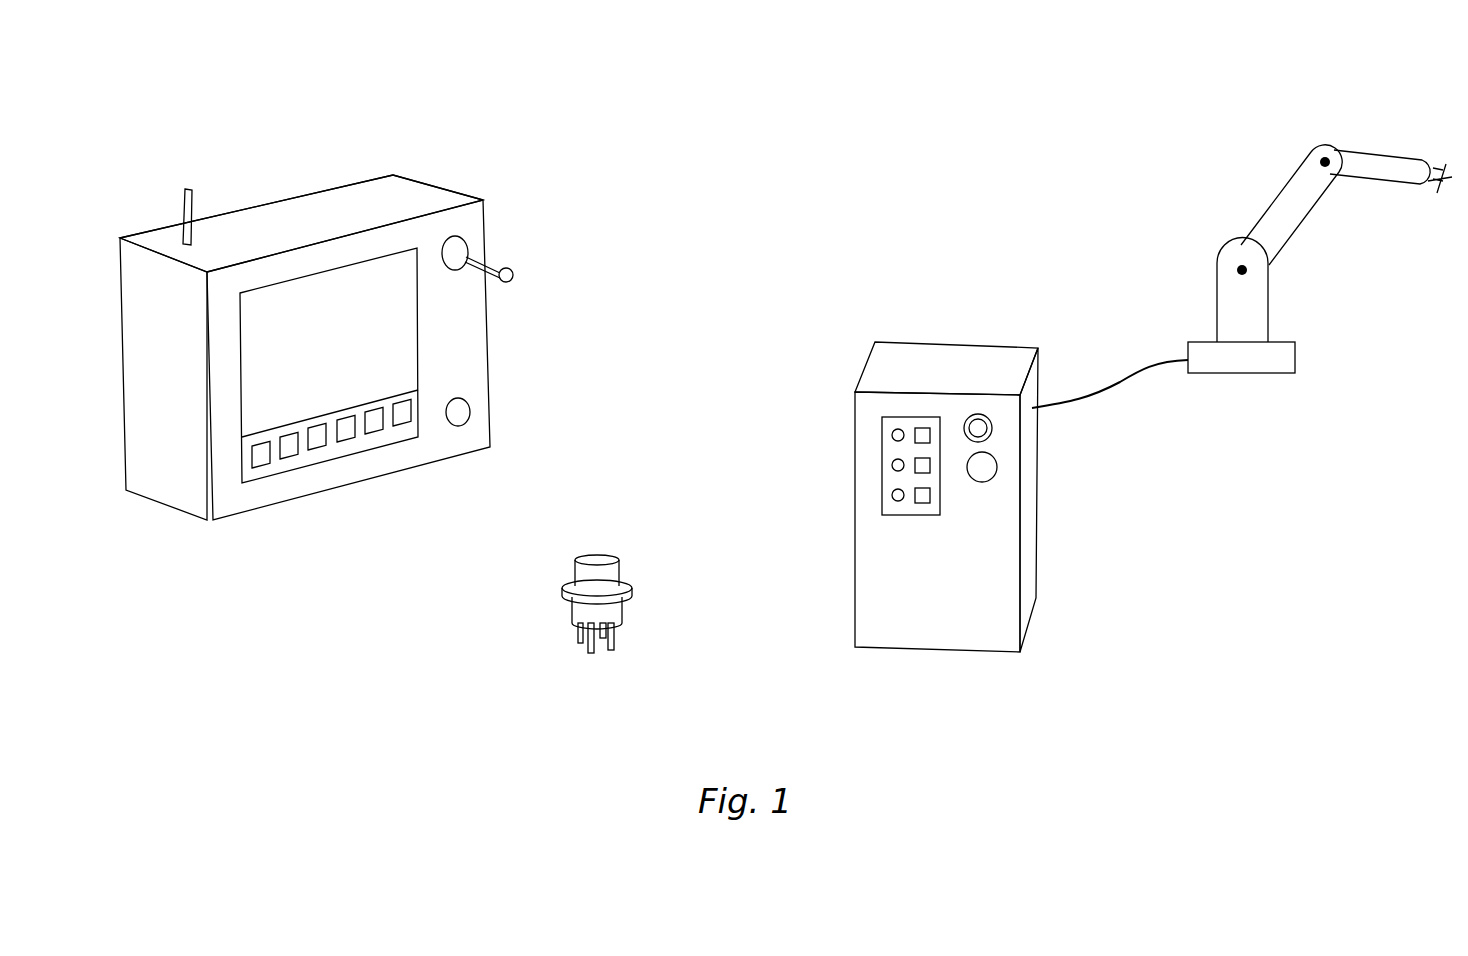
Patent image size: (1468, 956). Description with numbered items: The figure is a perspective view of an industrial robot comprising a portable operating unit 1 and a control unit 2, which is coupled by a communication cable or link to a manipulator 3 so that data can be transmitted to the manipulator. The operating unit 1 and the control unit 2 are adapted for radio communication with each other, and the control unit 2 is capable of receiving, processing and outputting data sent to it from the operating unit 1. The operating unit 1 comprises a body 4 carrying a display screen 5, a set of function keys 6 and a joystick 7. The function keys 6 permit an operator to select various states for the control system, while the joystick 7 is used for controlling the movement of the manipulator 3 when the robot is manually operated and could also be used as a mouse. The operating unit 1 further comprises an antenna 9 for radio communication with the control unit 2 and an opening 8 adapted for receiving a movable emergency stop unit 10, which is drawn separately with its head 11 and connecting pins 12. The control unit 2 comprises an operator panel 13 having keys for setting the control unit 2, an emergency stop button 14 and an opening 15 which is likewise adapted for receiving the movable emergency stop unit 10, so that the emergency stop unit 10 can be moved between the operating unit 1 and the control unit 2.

The portable operating unit 1 is at (296, 188).
The control unit 2 is at (959, 336).
The manipulator 3 is at (1318, 225).
The body 4 is at (418, 193).
The display screen 5 is at (372, 292).
The function keys 6 is at (291, 456).
The joystick 7 is at (513, 272).
The opening 8 is at (470, 412).
The antenna 9 is at (193, 195).
The movable emergency stop unit 10 is at (550, 582).
The sensor head 11 is at (597, 560).
The connection pins 12 is at (615, 637).
The operator panel 13 is at (888, 453).
The emergency stop button 14 is at (985, 436).
The opening 15 is at (988, 471).